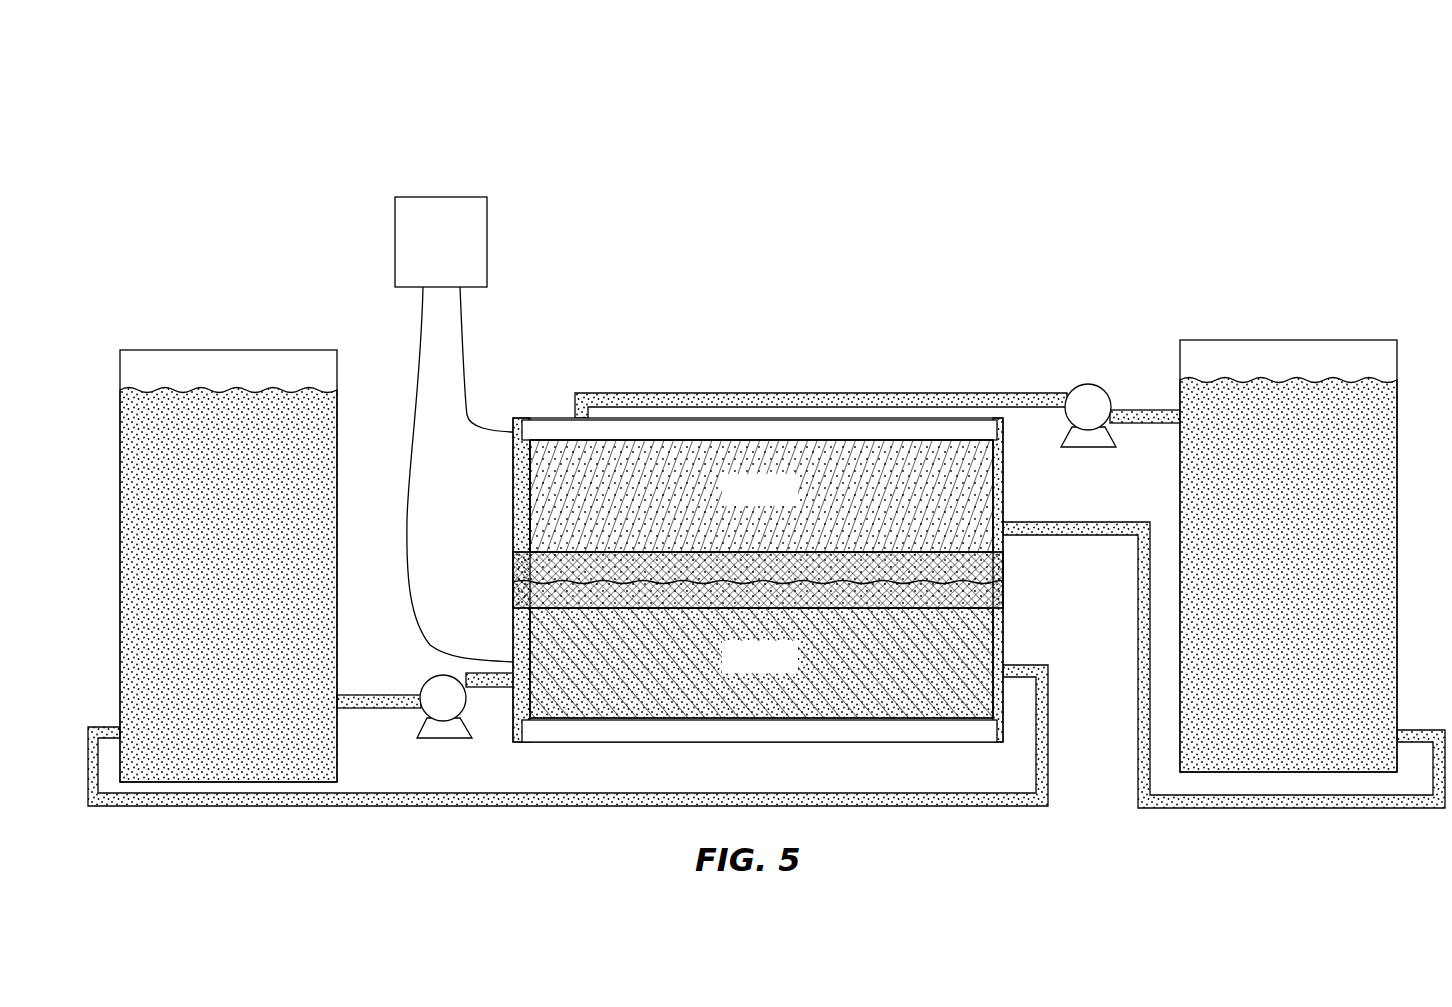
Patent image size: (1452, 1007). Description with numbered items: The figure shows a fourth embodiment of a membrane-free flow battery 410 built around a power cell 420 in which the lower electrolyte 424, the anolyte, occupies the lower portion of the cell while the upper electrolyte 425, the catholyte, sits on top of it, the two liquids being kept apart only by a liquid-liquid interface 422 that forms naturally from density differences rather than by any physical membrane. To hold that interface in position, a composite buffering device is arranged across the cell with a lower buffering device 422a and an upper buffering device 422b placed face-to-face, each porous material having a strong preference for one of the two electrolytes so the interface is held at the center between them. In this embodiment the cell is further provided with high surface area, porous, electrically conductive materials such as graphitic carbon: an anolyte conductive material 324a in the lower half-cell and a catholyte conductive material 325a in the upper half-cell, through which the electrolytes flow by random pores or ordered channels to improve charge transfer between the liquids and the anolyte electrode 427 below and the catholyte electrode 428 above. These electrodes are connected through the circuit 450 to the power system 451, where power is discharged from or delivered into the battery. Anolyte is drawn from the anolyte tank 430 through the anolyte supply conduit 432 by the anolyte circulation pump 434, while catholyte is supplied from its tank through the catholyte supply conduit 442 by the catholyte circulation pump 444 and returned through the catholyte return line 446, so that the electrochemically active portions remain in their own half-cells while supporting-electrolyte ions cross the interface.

The flow battery 410 is at (580, 68).
The power system 451 is at (465, 256).
The circuit 450 is at (478, 340).
The anolyte tank 430 is at (152, 350).
The anolyte supply conduit 432 is at (392, 708).
The anolyte circulation pump 434 is at (440, 690).
The catholyte supply conduit 442 is at (1014, 393).
The catholyte circulation pump 444 is at (1093, 396).
The catholyte return line 446 is at (1085, 522).
The power cell 420 is at (855, 346).
The catholyte electrode 428 is at (1003, 440).
The upper electrolyte 425 is at (515, 495).
The catholyte conductive material 325a is at (793, 505).
The liquid-liquid interface 422 is at (769, 586).
The upper buffering device 422b is at (515, 567).
The lower buffering device 422a is at (1003, 600).
The lower electrolyte 424 is at (515, 633).
The anolyte conductive material 324a is at (793, 672).
The anolyte electrode 427 is at (757, 740).